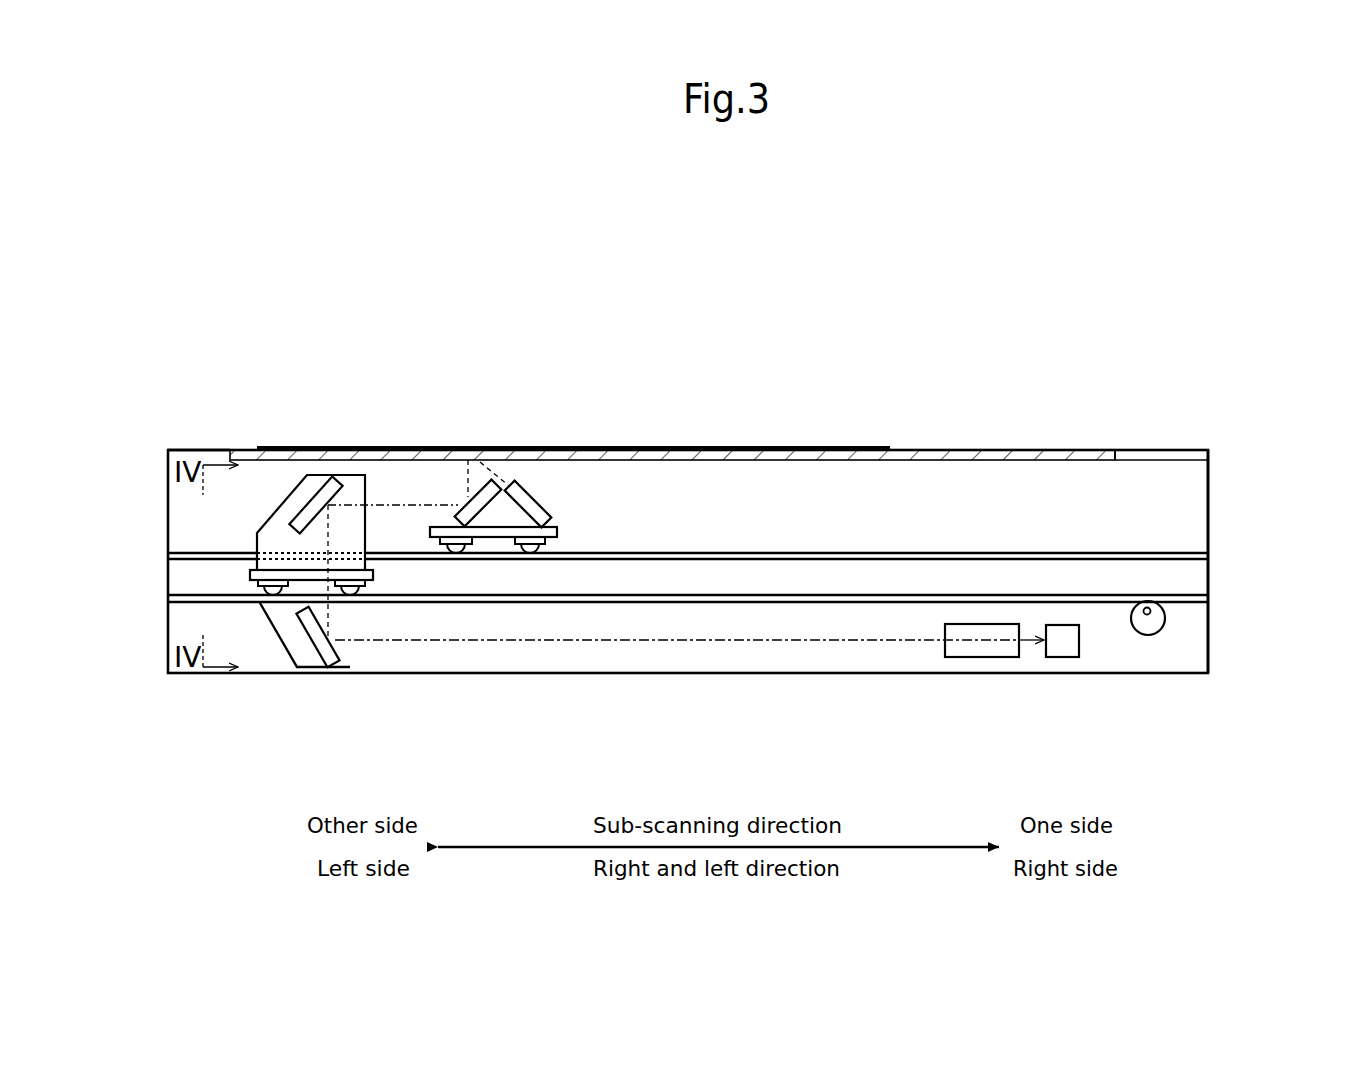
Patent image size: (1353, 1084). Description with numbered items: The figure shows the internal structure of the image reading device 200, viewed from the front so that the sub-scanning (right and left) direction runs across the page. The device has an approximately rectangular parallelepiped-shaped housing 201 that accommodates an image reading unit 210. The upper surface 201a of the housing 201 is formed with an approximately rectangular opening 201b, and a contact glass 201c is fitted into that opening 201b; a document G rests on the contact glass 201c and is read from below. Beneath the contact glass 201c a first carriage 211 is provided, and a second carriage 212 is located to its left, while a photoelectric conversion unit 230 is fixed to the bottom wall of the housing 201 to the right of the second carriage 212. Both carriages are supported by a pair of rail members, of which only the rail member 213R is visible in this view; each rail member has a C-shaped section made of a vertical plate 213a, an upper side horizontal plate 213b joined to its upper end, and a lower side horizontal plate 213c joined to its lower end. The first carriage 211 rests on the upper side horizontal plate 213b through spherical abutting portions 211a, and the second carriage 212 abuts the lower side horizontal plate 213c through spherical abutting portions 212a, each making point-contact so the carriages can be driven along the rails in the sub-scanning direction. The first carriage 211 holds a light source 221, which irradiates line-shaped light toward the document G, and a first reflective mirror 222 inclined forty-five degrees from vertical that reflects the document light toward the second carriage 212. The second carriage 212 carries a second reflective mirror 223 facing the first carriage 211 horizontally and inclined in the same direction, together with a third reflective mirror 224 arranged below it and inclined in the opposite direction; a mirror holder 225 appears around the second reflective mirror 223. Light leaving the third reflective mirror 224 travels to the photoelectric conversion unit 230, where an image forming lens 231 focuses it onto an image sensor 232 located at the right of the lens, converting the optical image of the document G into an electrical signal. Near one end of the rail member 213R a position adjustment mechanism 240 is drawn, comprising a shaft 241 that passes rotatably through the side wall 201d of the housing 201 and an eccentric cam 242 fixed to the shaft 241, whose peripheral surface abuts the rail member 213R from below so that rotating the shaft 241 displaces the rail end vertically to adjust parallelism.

The image reading device 200 is at (716, 503).
The housing 201 is at (166, 491).
The upper surface 201a is at (203, 449).
The opening 201b is at (1099, 449).
The contact glass 201c is at (1021, 449).
The side wall 201d is at (1183, 497).
The document G is at (649, 446).
The image reading unit 210 is at (366, 642).
The first carriage 211 is at (508, 483).
The abutting portion 211a is at (530, 550).
The second carriage 212 is at (273, 545).
The abutting portion 212a is at (340, 590).
The vertical plate 213a is at (733, 583).
The upper side horizontal plate 213b is at (672, 552).
The lower side horizontal plate 213c is at (752, 603).
The rail member 213R is at (796, 551).
The light source 221 is at (529, 488).
The first reflective mirror 222 is at (456, 482).
The second reflective mirror 223 is at (317, 494).
The third reflective mirror 224 is at (320, 658).
The mirror holder 225 is at (286, 497).
The photoelectric conversion unit 230 is at (1009, 708).
The image forming lens 231 is at (960, 658).
The image sensor 232 is at (1056, 658).
The position adjustment mechanism 240 is at (1197, 661).
The shaft 241 is at (1147, 614).
The eccentric cam 242 is at (1160, 632).